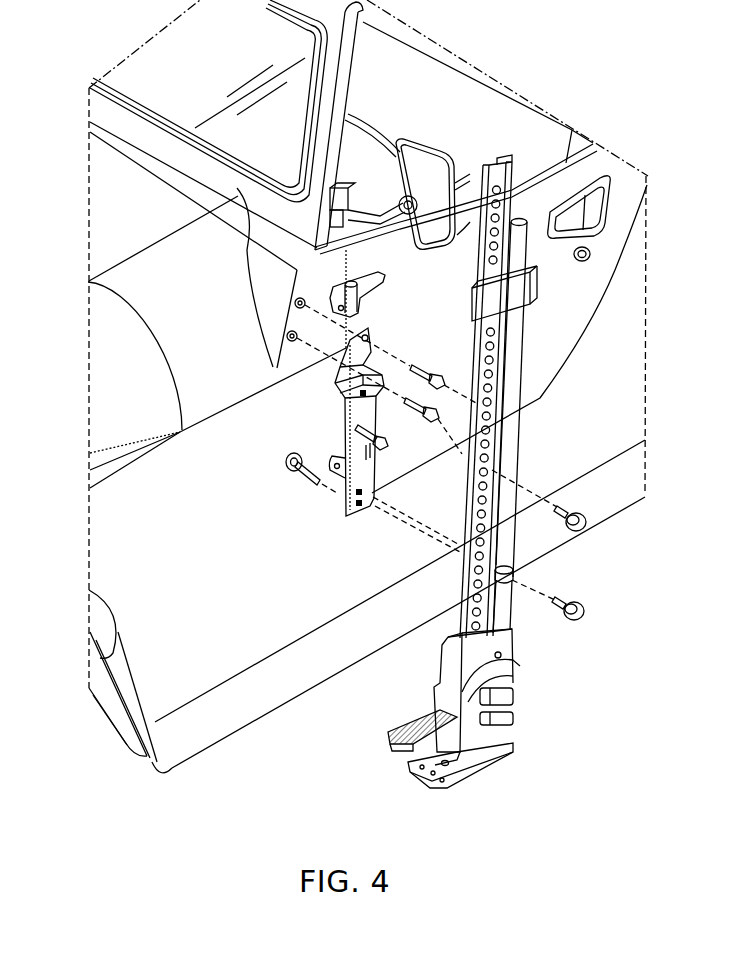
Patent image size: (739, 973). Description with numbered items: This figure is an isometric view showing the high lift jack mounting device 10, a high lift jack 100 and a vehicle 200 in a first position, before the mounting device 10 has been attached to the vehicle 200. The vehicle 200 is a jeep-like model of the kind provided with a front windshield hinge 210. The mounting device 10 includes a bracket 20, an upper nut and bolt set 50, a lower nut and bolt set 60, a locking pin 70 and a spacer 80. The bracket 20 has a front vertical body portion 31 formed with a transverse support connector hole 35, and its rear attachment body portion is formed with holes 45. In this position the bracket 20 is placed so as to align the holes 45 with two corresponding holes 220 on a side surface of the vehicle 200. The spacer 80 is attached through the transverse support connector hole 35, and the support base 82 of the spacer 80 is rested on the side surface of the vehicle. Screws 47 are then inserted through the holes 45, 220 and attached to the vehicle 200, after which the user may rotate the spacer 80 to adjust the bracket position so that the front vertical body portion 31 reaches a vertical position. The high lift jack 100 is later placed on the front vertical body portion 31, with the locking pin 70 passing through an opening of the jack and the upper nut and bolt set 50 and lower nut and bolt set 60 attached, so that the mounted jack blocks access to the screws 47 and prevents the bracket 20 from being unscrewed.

The high lift jack mounting device 10 is at (354, 413).
The bracket 20 is at (333, 410).
The front vertical body portion 31 is at (368, 457).
The transverse support connector hole 35 is at (360, 508).
The holes 45 is at (366, 338).
The screws 47 is at (424, 368).
The upper nut and bolt set 50 is at (587, 524).
The lower nut and bolt set 60 is at (583, 608).
The locking pin 70 is at (383, 428).
The spacer 80 is at (296, 483).
The support base 82 is at (285, 463).
The high lift jack 100 is at (520, 427).
The vehicle 200 is at (233, 717).
The front windshield hinge 210 is at (233, 188).
The holes 220 is at (295, 303).